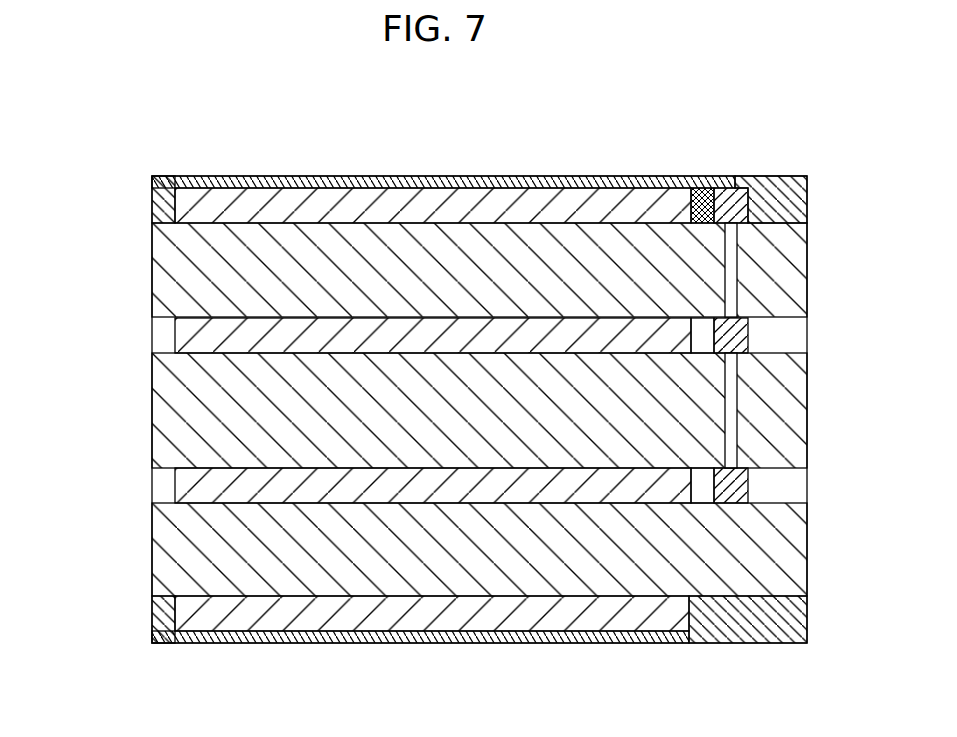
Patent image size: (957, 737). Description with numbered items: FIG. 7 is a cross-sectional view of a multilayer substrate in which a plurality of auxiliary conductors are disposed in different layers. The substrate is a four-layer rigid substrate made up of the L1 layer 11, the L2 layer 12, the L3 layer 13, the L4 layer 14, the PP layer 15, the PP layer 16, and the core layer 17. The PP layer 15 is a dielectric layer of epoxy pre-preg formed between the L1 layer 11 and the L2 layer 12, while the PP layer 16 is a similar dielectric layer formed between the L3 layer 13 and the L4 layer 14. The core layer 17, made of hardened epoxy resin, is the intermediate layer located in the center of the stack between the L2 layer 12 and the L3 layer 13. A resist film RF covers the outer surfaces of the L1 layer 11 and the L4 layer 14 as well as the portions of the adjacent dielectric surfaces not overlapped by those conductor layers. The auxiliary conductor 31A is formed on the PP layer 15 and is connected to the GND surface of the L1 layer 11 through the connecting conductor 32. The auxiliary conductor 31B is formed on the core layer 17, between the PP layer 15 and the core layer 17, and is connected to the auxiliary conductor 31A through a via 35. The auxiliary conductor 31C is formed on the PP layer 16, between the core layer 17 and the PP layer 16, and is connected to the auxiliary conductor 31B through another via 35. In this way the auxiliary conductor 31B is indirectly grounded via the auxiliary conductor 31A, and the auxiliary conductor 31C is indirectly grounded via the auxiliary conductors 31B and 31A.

The L1 layer 11 is at (207, 207).
The L2 layer 12 is at (183, 337).
The L3 layer 13 is at (183, 488).
The L4 layer 14 is at (207, 615).
The PP layer 15 is at (783, 283).
The PP layer 16 is at (770, 551).
The core layer 17 is at (772, 417).
The auxiliary conductor 31A is at (731, 176).
The auxiliary conductor 31B is at (747, 344).
The auxiliary conductor 31C is at (747, 495).
The connecting conductor 32 is at (696, 176).
The via 35 is at (732, 258).
The resist film RF is at (395, 177).